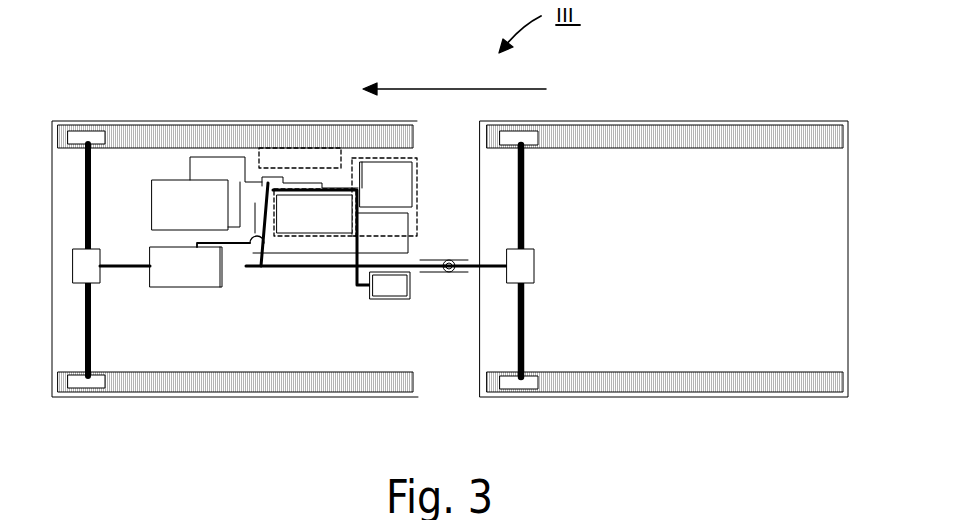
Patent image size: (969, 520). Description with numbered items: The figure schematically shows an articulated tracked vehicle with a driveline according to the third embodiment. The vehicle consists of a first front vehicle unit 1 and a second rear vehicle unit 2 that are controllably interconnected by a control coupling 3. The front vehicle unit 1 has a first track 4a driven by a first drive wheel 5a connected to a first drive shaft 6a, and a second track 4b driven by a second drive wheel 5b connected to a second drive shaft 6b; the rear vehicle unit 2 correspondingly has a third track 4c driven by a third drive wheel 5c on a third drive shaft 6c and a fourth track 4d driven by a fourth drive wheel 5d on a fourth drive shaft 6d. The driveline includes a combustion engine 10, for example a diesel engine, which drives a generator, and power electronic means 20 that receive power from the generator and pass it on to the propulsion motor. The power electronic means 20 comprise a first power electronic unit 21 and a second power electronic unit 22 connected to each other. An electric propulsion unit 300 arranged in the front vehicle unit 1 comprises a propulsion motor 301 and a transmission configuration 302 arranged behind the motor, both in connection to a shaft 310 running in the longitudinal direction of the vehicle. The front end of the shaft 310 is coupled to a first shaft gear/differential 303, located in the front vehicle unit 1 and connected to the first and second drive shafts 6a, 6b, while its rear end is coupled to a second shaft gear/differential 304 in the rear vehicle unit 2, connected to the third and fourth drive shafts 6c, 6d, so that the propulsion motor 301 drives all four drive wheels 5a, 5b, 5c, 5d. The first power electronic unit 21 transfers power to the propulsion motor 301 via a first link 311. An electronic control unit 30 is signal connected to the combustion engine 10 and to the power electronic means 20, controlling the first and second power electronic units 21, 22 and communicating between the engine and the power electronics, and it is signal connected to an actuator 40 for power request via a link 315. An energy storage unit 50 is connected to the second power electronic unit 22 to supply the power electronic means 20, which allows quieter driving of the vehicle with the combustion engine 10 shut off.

The first front vehicle unit 1 is at (279, 110).
The second rear vehicle unit 2 is at (709, 108).
The control coupling 3 is at (454, 285).
The first track 4a is at (246, 130).
The second track 4b is at (266, 380).
The third track 4c is at (800, 136).
The fourth track 4d is at (713, 378).
The first drive wheel 5a is at (84, 136).
The second drive wheel 5b is at (89, 386).
The third drive wheel 5c is at (527, 138).
The fourth drive wheel 5d is at (533, 383).
The first drive shaft 6a is at (92, 157).
The second drive shaft 6b is at (120, 373).
The third drive shaft 6c is at (525, 157).
The fourth drive shaft 6d is at (525, 365).
The combustion engine 10 is at (203, 216).
The power electronic means 20 is at (234, 188).
The first power electronic unit 21 is at (325, 224).
The second power electronic unit 22 is at (400, 194).
The electronic control unit 30 is at (260, 268).
The actuator 40 is at (404, 296).
The energy storage unit 50 is at (298, 158).
The electric propulsion unit 300 is at (200, 294).
The propulsion motor 301 is at (203, 279).
The transmission configuration 302 is at (236, 285).
The first shaft gear/differential 303 is at (94, 258).
The second shaft gear/differential 304 is at (530, 262).
The shaft 310 is at (130, 268).
The first link 311 is at (286, 240).
The link 315 is at (370, 160).